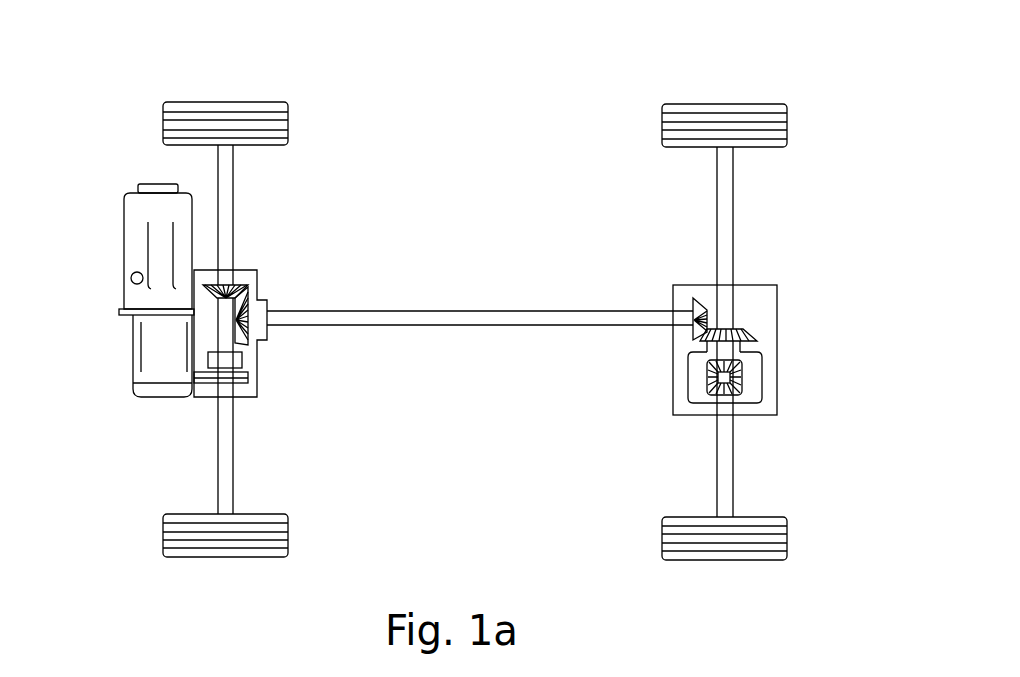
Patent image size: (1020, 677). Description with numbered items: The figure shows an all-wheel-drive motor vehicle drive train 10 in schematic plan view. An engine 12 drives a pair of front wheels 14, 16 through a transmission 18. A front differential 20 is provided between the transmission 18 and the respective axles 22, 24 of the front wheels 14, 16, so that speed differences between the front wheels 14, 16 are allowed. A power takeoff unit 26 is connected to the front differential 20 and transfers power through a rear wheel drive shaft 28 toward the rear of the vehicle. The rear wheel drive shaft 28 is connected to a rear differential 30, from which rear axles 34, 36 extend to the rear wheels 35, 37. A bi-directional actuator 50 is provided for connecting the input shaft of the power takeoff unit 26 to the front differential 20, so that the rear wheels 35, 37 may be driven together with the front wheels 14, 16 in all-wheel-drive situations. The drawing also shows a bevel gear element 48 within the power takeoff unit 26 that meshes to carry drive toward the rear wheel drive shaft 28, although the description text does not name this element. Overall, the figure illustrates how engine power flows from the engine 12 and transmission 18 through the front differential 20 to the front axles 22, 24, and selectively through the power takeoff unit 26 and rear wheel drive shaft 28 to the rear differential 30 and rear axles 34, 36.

The motor vehicle drive train 10 is at (834, 231).
The engine 12 is at (133, 248).
The front wheel 14 is at (215, 558).
The front wheel 16 is at (218, 102).
The transmission 18 is at (141, 350).
The front differential 20 is at (245, 380).
The axle 22 is at (228, 450).
The axle 24 is at (232, 185).
The power takeoff unit 26 is at (258, 292).
The rear wheel drive shaft 28 is at (462, 310).
The rear differential 30 is at (772, 340).
The rear axle 34 is at (725, 452).
The rear wheel 35 is at (723, 560).
The rear axle 36 is at (725, 190).
The rear wheel 37 is at (723, 104).
The bevel gear 48 is at (245, 350).
The bi-directional actuator 50 is at (245, 358).